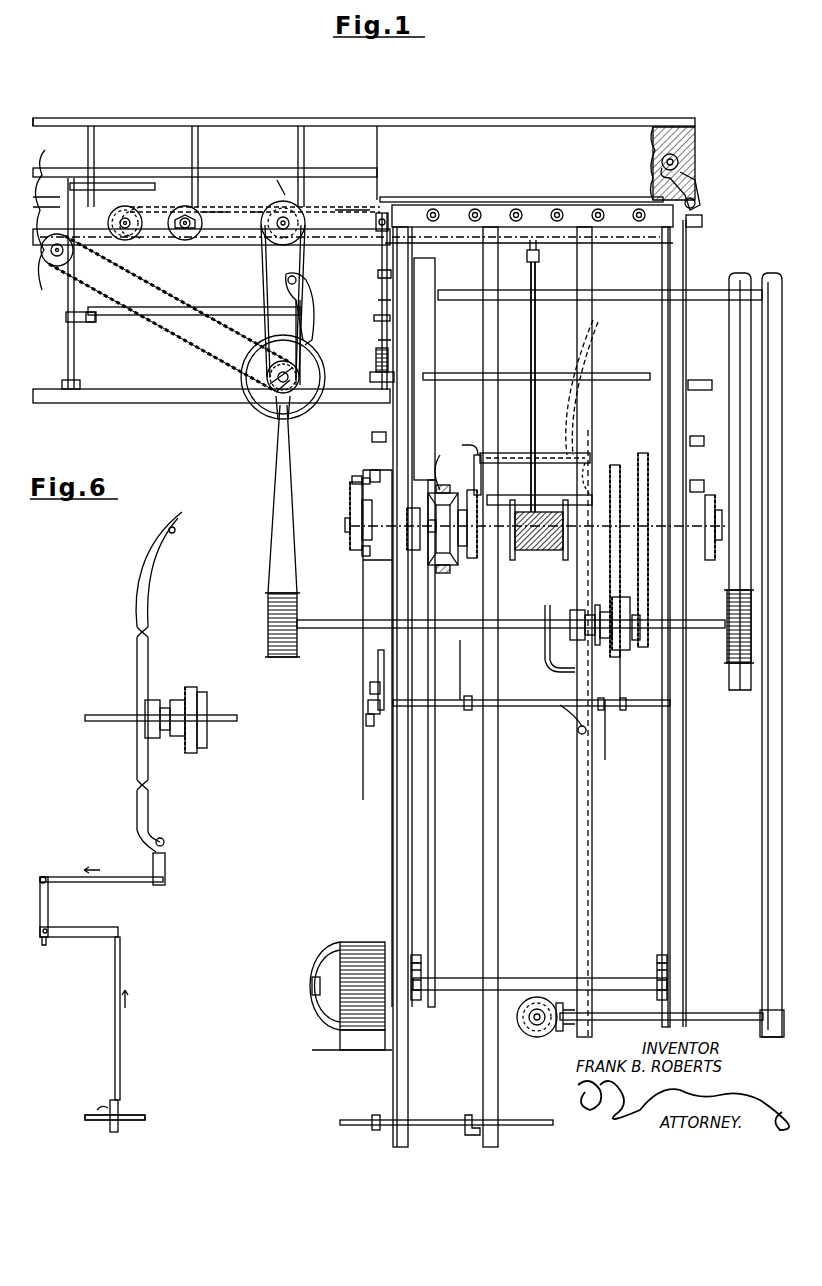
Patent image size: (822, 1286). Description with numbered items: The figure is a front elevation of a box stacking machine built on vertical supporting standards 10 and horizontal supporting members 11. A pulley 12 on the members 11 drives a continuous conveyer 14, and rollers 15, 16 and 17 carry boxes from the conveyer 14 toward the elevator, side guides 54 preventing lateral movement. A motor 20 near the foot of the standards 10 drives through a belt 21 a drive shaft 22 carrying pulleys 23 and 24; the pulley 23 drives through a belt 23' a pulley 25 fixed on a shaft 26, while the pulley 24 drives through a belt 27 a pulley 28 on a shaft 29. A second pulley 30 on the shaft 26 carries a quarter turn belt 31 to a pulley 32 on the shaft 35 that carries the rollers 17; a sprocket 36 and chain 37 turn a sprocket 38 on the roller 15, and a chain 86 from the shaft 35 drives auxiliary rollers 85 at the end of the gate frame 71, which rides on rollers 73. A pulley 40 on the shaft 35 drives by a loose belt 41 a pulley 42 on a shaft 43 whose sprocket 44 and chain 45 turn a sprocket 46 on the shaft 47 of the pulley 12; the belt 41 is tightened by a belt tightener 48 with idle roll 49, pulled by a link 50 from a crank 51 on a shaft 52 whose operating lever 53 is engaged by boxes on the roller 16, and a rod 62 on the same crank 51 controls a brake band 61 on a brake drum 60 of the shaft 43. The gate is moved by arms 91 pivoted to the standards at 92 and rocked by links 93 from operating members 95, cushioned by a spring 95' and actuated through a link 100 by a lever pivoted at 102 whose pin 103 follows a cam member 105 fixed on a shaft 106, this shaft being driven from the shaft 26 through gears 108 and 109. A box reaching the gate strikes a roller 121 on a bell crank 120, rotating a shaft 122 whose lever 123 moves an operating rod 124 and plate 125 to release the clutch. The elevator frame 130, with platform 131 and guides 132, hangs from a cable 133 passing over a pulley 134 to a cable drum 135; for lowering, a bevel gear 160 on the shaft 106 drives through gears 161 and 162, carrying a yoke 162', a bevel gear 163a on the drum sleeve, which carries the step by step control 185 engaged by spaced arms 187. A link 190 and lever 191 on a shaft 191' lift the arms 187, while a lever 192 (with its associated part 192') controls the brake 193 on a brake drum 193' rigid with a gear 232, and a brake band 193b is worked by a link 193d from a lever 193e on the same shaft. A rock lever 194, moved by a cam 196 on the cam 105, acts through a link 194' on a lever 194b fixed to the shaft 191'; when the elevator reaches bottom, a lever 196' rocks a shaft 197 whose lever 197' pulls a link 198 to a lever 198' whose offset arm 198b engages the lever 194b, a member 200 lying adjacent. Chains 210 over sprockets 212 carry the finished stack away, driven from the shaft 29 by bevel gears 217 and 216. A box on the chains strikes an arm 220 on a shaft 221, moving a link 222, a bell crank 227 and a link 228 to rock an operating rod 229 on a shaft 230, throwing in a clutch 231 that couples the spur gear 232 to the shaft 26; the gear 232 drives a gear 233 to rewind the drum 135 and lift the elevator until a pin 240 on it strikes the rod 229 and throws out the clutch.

In FIG. 1, the vertical supporting standards 10 is at (393, 855).
In FIG. 1, the horizontal supporting members 11 is at (138, 245).
In FIG. 1, the pulley 12 is at (52, 215).
In FIG. 1, the continuous conveyer 14 is at (50, 170).
In FIG. 1, the roller 15 is at (116, 213).
In FIG. 1, the roller 16 is at (190, 208).
In FIG. 1, the spaced rollers 17 is at (262, 210).
In FIG. 1, the motor 20 is at (343, 945).
In FIG. 1, the belt 21 is at (430, 893).
In FIG. 1, the drive shaft 22 is at (615, 295).
In FIG. 1, the pulley 23 is at (745, 467).
In FIG. 1, the belt 23' is at (721, 485).
In FIG. 1, the pulley 24 is at (778, 274).
In FIG. 1, the pulley 25 is at (730, 662).
In FIG. 1, the shaft 26 is at (332, 620).
In FIG. 6, the shaft 26 is at (106, 722).
In FIG. 1, the belt 27 is at (775, 365).
In FIG. 1, the pulley 28 is at (765, 1003).
In FIG. 1, the shaft 29 is at (692, 1012).
In FIG. 1, the second pulley 30 is at (268, 607).
In FIG. 1, the quarter turn belt 31 is at (282, 514).
In FIG. 1, the pulley 32 is at (285, 195).
In FIG. 1, the shaft 35 is at (300, 207).
In FIG. 1, the sprocket 36 is at (283, 201).
In FIG. 1, the chain 37 is at (228, 208).
In FIG. 1, the sprocket 38 is at (148, 210).
In FIG. 1, the pulley 40 is at (278, 222).
In FIG. 1, the belt 41 is at (262, 266).
In FIG. 1, the pulley 42 is at (245, 378).
In FIG. 1, the shaft 43 is at (272, 385).
In FIG. 1, the sprocket 44 is at (280, 392).
In FIG. 1, the chain 45 is at (160, 335).
In FIG. 1, the sprocket 46 is at (66, 316).
In FIG. 1, the shaft 47 is at (50, 282).
In FIG. 1, the belt tightener 48 is at (312, 293).
In FIG. 1, the idle roll 49 is at (297, 277).
In FIG. 1, the link 50 is at (225, 311).
In FIG. 1, the crank 51 is at (86, 318).
In FIG. 1, the shaft 52 is at (68, 359).
In FIG. 1, the operating lever 53 is at (135, 183).
In FIG. 1, the guides 54 is at (168, 124).
In FIG. 1, the brake drum 60 is at (255, 363).
In FIG. 1, the brake band 61 is at (292, 420).
In FIG. 1, the rod 62 is at (256, 311).
In FIG. 1, the gate frame 71 is at (450, 232).
In FIG. 1, the rollers 73 is at (703, 222).
In FIG. 1, the auxiliary rollers 85 is at (378, 214).
In FIG. 1, the chain 86 is at (340, 216).
In FIG. 1, the arms 91 is at (380, 262).
In FIG. 1, the pivot 92 is at (705, 382).
In FIG. 1, the links 93 is at (378, 329).
In FIG. 1, the operating members 95 is at (370, 283).
In FIG. 1, the spring 95' is at (369, 362).
In FIG. 1, the link 100 is at (372, 440).
In FIG. 1, the pivot 102 is at (375, 470).
In FIG. 1, the pin 103 is at (364, 480).
In FIG. 1, the cam member 105 is at (352, 480).
In FIG. 1, the shaft 106 is at (347, 528).
In FIG. 1, the gear 108 is at (638, 645).
In FIG. 1, the gear 109 is at (645, 453).
In FIG. 1, the bell crank 120 is at (680, 160).
In FIG. 1, the roller 121 is at (670, 152).
In FIG. 1, the shaft 122 is at (698, 205).
In FIG. 1, the lever 123 is at (690, 194).
In FIG. 1, the operating rod 124 is at (660, 327).
In FIG. 1, the plate 125 is at (645, 505).
In FIG. 1, the elevator frame 130 is at (512, 447).
In FIG. 1, the elevator platform 131 is at (628, 380).
In FIG. 1, the guides 132 is at (592, 415).
In FIG. 1, the cable 133 is at (531, 345).
In FIG. 1, the pulley 134 is at (530, 265).
In FIG. 1, the cable drum 135 is at (510, 562).
In FIG. 1, the bevel gear 160 is at (410, 565).
In FIG. 1, the gear 161 is at (434, 455).
In FIG. 1, the gear 162 is at (436, 535).
In FIG. 1, the yoke 162' is at (400, 562).
In FIG. 1, the bevel gear 163a is at (470, 560).
In FIG. 1, the step by step control 185 is at (473, 480).
In FIG. 1, the arms 187 is at (460, 458).
In FIG. 1, the link 190 is at (468, 655).
In FIG. 1, the lever 191 is at (461, 716).
In FIG. 1, the shaft 191' is at (531, 716).
In FIG. 1, the lever 192 is at (644, 715).
In FIG. 1, the rod 192' is at (647, 676).
In FIG. 1, the brake 193 is at (640, 641).
In FIG. 6, the brake 193 is at (214, 729).
In FIG. 6, the brake drum 193' is at (229, 718).
In FIG. 1, the brake band 193b is at (605, 640).
In FIG. 1, the link 193d is at (618, 712).
In FIG. 1, the lever 193e is at (600, 712).
In FIG. 1, the rock lever 194 is at (342, 525).
In FIG. 1, the link 194' is at (347, 566).
In FIG. 1, the lever 194b is at (370, 712).
In FIG. 1, the cam 196 is at (400, 550).
In FIG. 1, the lever 196' is at (449, 1133).
In FIG. 1, the shaft 197 is at (446, 1110).
In FIG. 1, the lever 197' is at (359, 1112).
In FIG. 1, the link 198 is at (366, 738).
In FIG. 1, the lever 198' is at (358, 729).
In FIG. 1, the offset arm 198b is at (370, 688).
In FIG. 1, the bar 200 is at (375, 668).
In FIG. 1, the chains 210 is at (420, 960).
In FIG. 1, the sprocket 212 is at (422, 972).
In FIG. 1, the bevel gear 216 is at (522, 1032).
In FIG. 1, the bevel gear 217 is at (562, 1031).
In FIG. 6, the arm 220 is at (120, 1110).
In FIG. 6, the shaft 221 is at (135, 1122).
In FIG. 6, the link 222 is at (121, 966).
In FIG. 6, the bell crank 227 is at (48, 905).
In FIG. 6, the link 228 is at (133, 882).
In FIG. 1, the operating rod 229 is at (565, 592).
In FIG. 6, the operating rod 229 is at (166, 868).
In FIG. 1, the shaft 230 is at (578, 733).
In FIG. 6, the shaft 230 is at (165, 840).
In FIG. 1, the clutch 231 is at (572, 630).
In FIG. 6, the clutch 231 is at (140, 712).
In FIG. 1, the spur gear 232 is at (612, 660).
In FIG. 6, the spur gear 232 is at (190, 690).
In FIG. 1, the gear 233 is at (618, 462).
In FIG. 1, the pin 240 is at (588, 470).
In FIG. 6, the pin 240 is at (176, 536).